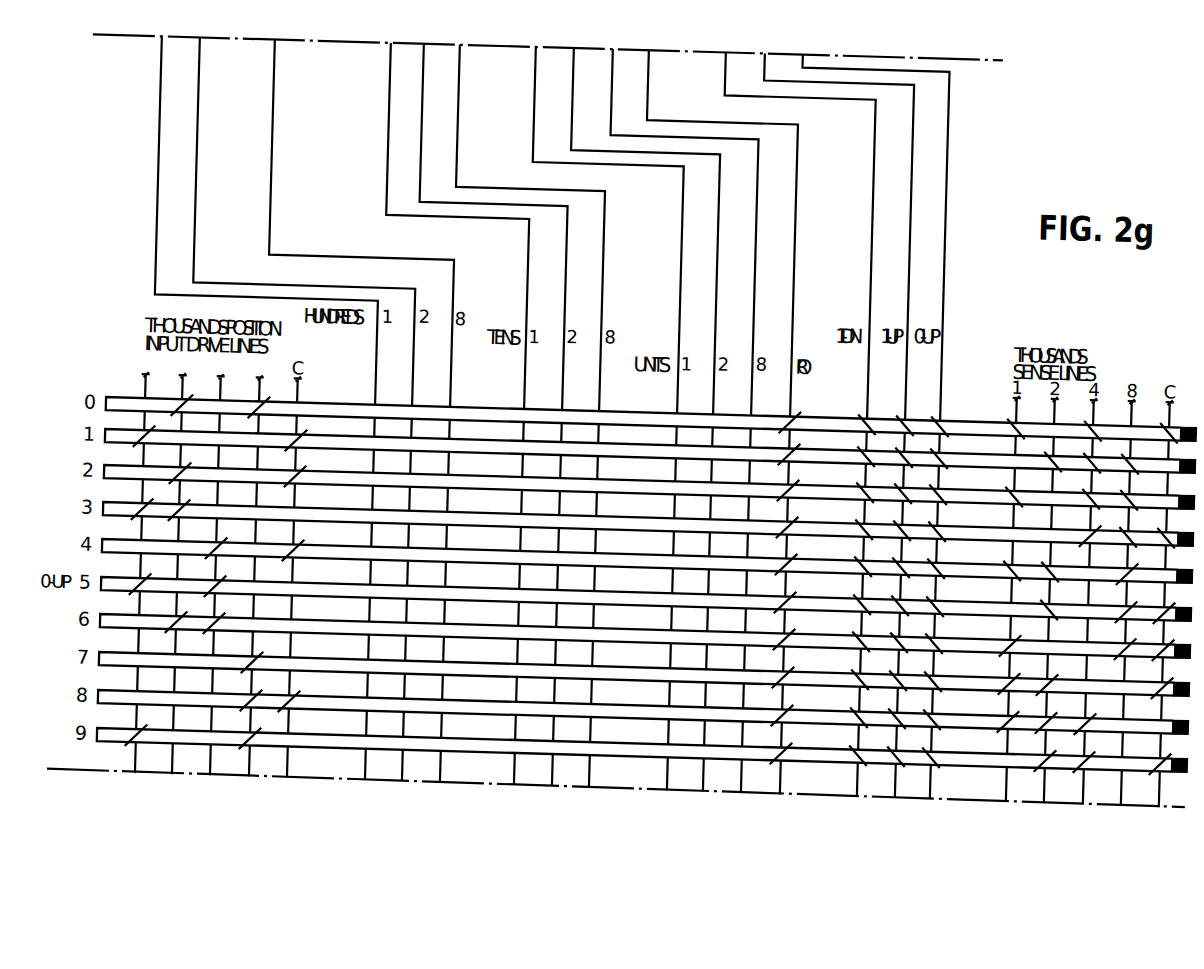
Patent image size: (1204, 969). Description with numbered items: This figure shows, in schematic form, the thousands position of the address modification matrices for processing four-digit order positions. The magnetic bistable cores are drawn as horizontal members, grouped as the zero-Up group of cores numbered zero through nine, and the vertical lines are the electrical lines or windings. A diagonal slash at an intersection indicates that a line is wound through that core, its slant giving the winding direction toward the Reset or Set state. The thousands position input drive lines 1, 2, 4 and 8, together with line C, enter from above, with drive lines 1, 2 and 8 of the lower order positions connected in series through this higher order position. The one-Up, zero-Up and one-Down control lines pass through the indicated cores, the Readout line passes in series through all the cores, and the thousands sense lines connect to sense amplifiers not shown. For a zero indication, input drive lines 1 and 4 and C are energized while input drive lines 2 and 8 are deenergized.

The input drive line 1 is at (140, 563).
The input drive line 2 is at (177, 564).
The input drive line 4 is at (215, 565).
The input drive line 8 is at (254, 566).